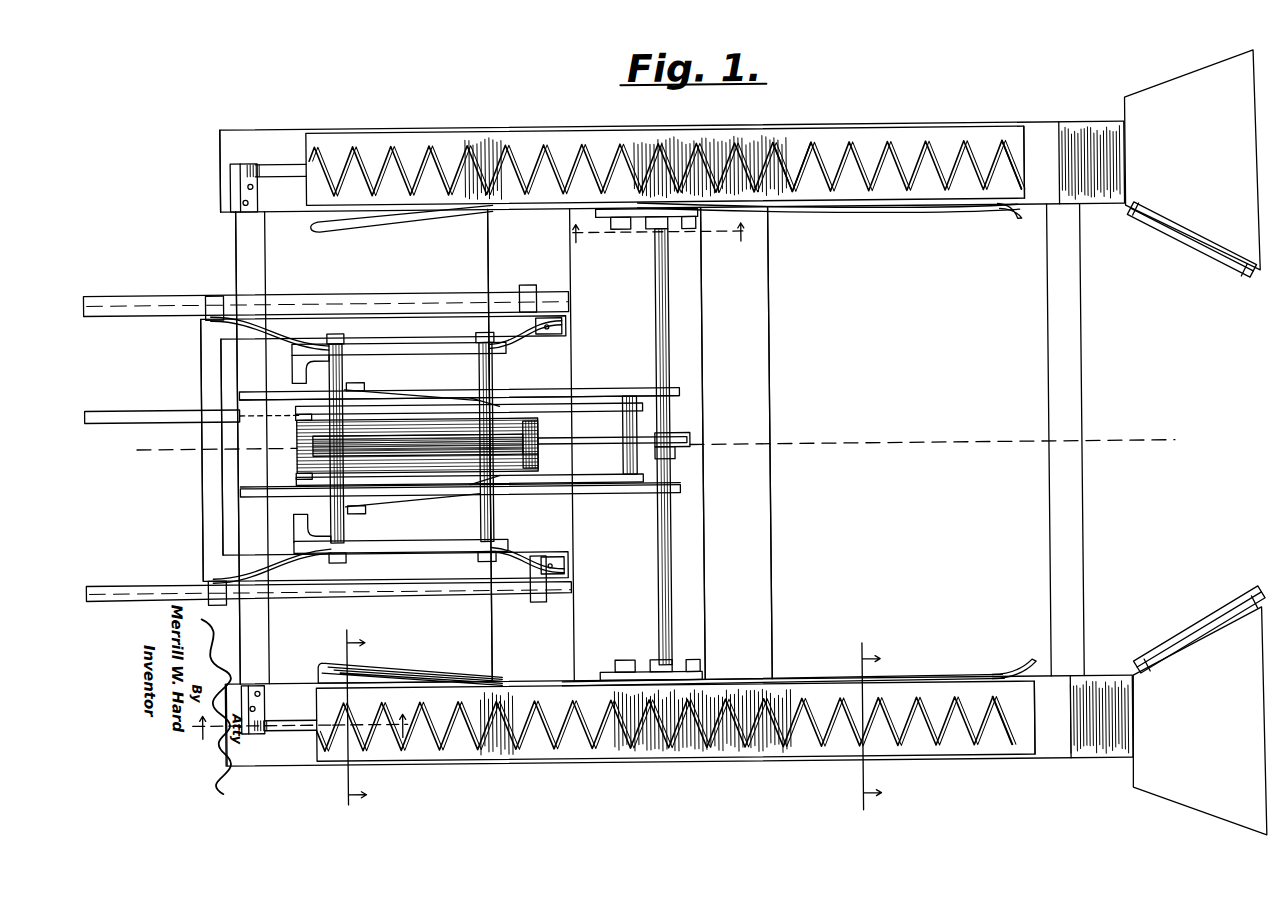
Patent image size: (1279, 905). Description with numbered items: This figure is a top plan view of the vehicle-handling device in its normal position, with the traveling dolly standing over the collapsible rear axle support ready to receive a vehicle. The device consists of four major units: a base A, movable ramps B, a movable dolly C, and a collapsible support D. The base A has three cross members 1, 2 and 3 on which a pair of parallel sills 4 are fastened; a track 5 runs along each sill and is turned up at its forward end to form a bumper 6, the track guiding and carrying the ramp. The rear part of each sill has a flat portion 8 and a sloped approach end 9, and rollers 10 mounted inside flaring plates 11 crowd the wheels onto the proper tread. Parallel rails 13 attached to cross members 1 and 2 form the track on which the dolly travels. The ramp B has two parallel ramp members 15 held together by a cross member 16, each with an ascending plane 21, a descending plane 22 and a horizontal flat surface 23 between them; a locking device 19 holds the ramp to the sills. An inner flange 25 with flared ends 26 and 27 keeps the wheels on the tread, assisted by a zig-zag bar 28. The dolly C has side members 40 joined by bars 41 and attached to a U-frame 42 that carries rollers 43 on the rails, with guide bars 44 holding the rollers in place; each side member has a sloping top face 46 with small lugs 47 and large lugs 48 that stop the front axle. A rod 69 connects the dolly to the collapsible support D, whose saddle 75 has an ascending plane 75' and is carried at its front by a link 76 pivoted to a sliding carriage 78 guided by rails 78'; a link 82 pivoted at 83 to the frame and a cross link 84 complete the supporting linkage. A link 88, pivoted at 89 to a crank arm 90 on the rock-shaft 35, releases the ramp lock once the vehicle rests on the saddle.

The base A is at (270, 116).
The movable ramps B is at (379, 143).
The movable dolly C is at (194, 361).
The collapsible support D is at (284, 467).
The cross member 1 is at (238, 234).
The cross member 2 is at (490, 244).
The cross member 3 is at (1048, 296).
The sill 4 is at (226, 136).
The track 5 is at (278, 163).
The bumper 6 is at (236, 172).
The flat portion 8 is at (1038, 132).
The sloped approach end 9 is at (1093, 132).
The roller 10 is at (1185, 246).
The flaring plate 11 is at (1180, 90).
The parallel rail 13 is at (122, 292).
The ramp member 15 is at (458, 130).
The cross member 16 is at (752, 330).
The locking device 19 is at (619, 242).
The ascending plane 21 is at (910, 134).
The descending plane 22 is at (408, 132).
The horizontal flat surface 23 is at (528, 133).
The inner flange 25 is at (884, 212).
The flared flange end 26 is at (1005, 212).
The flared flange end 27 is at (364, 226).
The zig-zag bar 28 is at (812, 146).
The rock-shaft 35 is at (656, 303).
The side member 40 is at (292, 315).
The bar 41 is at (345, 356).
The U-frame 42 is at (210, 398).
The roller 43 is at (212, 300).
The guide bar 44 is at (526, 284).
The top face 46 is at (508, 348).
The small upstanding lug 47 is at (494, 348).
The large upstanding lug 48 is at (300, 378).
The rod 69 is at (100, 406).
The saddle 75 is at (548, 443).
The ascending plane 75' is at (551, 459).
The link 76 is at (300, 414).
The sliding carriage 78 is at (460, 450).
The rail 78' is at (460, 445).
The link 82 is at (408, 395).
The pivot 83 is at (372, 386).
The cross link 84 is at (448, 396).
The link 88 is at (598, 440).
The pivot 89 is at (690, 436).
The crank arm 90 is at (675, 434).